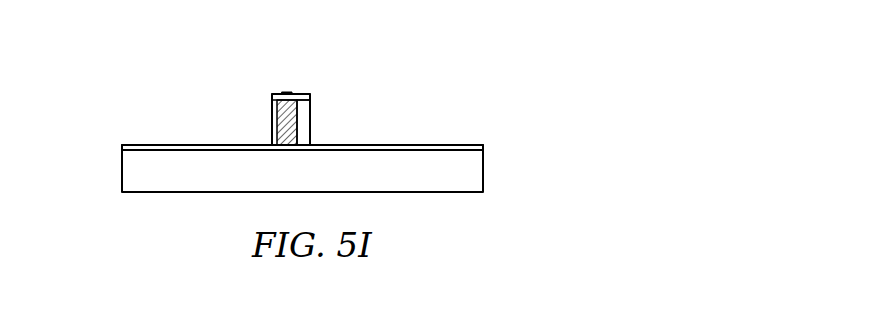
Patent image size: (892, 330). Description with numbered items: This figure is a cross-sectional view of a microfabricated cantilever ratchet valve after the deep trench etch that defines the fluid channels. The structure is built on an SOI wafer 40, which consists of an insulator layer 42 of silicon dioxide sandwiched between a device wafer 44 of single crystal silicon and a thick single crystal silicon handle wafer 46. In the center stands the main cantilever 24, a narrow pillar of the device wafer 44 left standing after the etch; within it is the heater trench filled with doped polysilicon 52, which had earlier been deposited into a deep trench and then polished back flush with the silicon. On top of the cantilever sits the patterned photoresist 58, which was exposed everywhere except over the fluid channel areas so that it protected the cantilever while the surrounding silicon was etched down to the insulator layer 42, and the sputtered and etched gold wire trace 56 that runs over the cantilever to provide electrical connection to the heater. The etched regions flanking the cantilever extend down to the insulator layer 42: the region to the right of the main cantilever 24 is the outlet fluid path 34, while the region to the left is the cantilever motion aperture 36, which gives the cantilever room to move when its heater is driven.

The main cantilever 24 is at (272, 90).
The outlet fluid path 34 is at (415, 117).
The cantilever motion aperture 36 is at (175, 117).
The SOI wafer 40 is at (115, 117).
The insulator layer 42 is at (483, 148).
The device wafer 44 is at (303, 113).
The handle wafer 46 is at (483, 177).
The polysilicon 52 is at (280, 122).
The gold wire trace 56 is at (288, 92).
The photoresist 58 is at (304, 96).